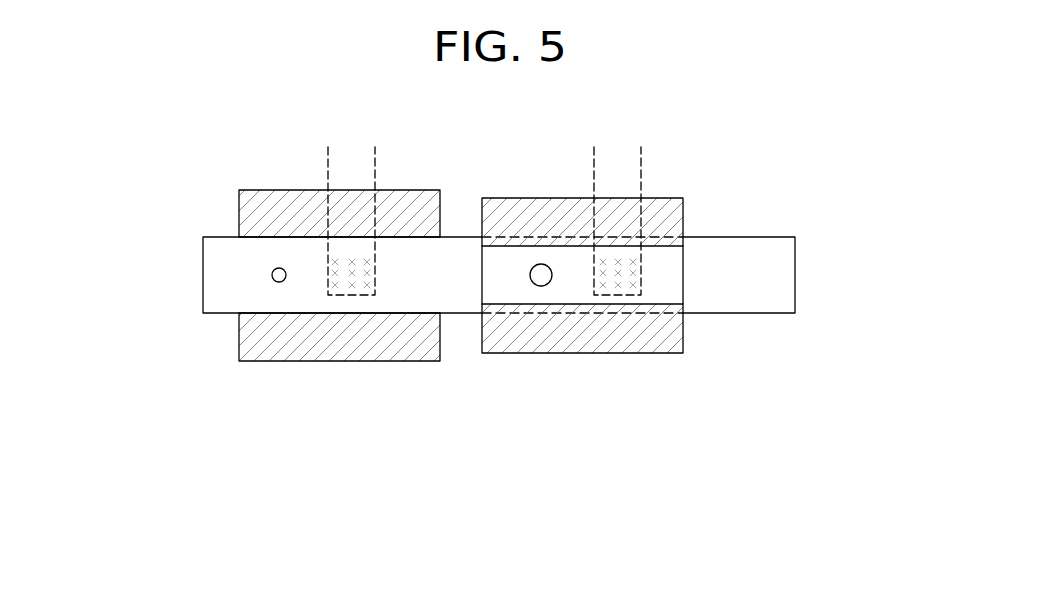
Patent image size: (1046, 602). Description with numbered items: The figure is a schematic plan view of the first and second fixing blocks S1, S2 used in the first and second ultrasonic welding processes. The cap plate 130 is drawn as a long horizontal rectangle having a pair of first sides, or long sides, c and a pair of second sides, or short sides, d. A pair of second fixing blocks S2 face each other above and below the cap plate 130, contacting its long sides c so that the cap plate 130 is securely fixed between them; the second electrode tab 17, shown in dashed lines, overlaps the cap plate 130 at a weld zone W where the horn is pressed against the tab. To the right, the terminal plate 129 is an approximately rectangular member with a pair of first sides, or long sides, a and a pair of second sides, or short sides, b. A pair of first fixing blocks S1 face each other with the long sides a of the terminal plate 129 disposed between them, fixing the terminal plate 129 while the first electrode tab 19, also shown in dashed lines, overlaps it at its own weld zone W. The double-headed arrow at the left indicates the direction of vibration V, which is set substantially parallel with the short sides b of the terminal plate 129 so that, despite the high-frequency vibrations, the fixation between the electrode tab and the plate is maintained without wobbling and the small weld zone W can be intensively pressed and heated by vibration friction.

The second electrode tab 17 is at (372, 175).
The first electrode tab 19 is at (638, 175).
The terminal plate 129 is at (675, 277).
The cap plate 130 is at (791, 277).
The first fixing blocks S1 is at (527, 198).
The second fixing blocks S2 is at (289, 198).
The weld zone W is at (352, 275).
The first sides a is at (573, 246).
The second sides b is at (481, 273).
The first sides c is at (222, 236).
The second sides d is at (202, 275).
The direction of vibration V is at (144, 199).